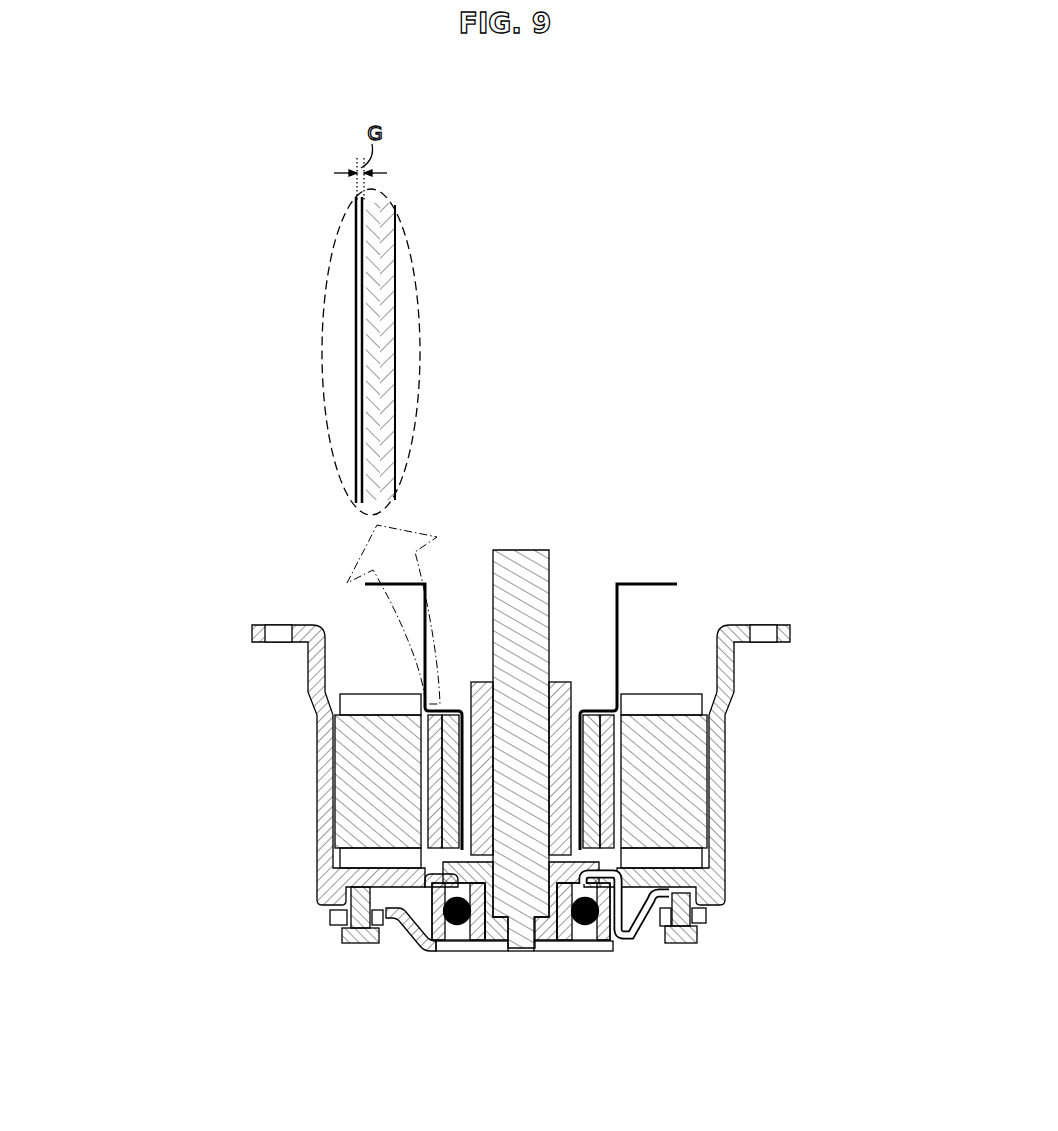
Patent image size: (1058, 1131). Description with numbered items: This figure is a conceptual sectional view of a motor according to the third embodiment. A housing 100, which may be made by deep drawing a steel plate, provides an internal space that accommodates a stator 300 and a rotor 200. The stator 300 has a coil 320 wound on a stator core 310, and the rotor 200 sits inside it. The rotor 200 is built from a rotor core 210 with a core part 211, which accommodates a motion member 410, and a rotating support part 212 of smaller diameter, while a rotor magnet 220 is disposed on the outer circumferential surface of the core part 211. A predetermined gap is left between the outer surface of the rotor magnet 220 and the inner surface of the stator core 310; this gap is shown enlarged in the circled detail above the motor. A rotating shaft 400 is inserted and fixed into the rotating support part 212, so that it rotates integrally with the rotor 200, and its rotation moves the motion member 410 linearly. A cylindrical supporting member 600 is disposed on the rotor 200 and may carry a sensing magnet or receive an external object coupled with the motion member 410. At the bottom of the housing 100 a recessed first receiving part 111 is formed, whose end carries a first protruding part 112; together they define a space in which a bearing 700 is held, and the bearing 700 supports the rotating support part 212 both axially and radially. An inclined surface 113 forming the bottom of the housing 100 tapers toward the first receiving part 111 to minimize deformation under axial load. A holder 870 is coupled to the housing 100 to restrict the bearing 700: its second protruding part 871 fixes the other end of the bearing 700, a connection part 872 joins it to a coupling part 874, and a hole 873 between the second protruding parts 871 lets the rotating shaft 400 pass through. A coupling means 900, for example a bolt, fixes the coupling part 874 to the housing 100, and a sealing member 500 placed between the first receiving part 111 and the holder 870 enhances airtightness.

The housing 100 is at (735, 664).
The first receiving part 111 is at (640, 890).
The first protruding part 112 is at (606, 890).
The inclined surface 113 is at (650, 895).
The rotor 200 is at (372, 521).
The rotor core 210 is at (406, 545).
The core part 211 is at (452, 800).
The rotating support part 212 is at (427, 885).
The rotor magnet 220 is at (433, 781).
The stator 300 is at (565, 532).
The stator core 310 is at (704, 745).
The coil 320 is at (704, 703).
The rotating shaft 400 is at (515, 549).
The motion member 410 is at (560, 682).
The sealing member 500 is at (330, 915).
The supporting member 600 is at (668, 583).
The bearing 700 is at (492, 897).
The holder 870 is at (637, 977).
The second protruding part 871 is at (614, 952).
The connection part 872 is at (660, 930).
The hole 873 is at (562, 950).
The coupling part 874 is at (699, 950).
The coupling means 900 is at (360, 943).